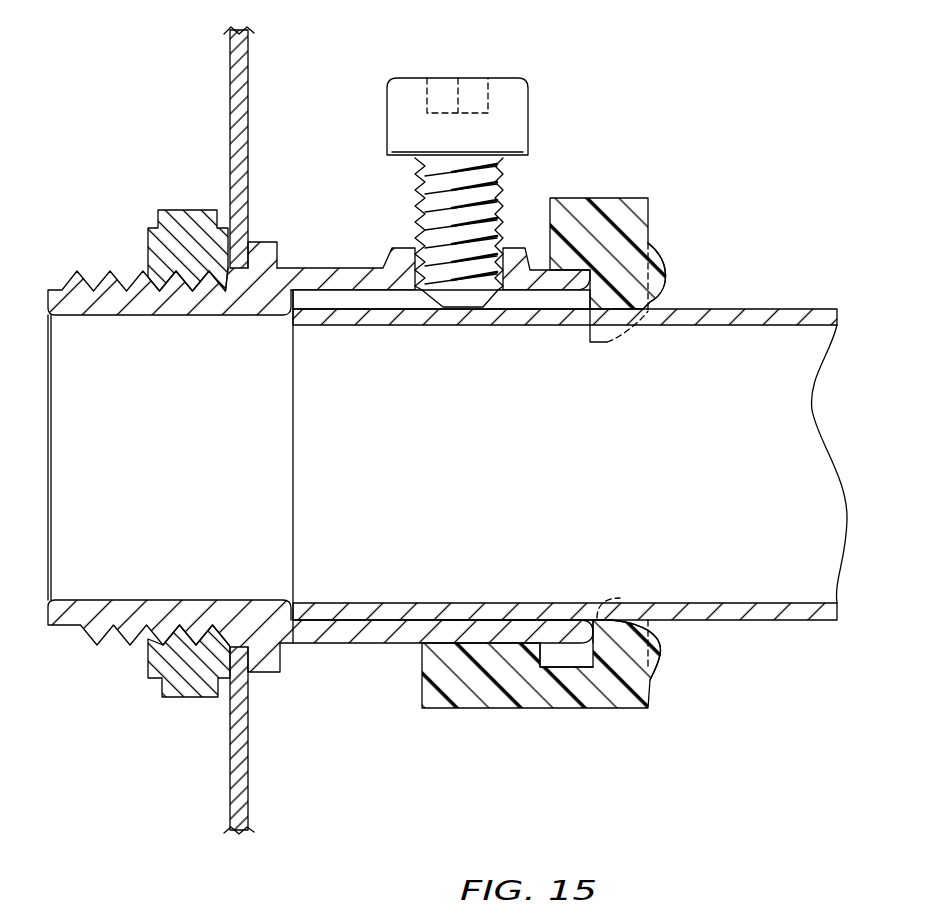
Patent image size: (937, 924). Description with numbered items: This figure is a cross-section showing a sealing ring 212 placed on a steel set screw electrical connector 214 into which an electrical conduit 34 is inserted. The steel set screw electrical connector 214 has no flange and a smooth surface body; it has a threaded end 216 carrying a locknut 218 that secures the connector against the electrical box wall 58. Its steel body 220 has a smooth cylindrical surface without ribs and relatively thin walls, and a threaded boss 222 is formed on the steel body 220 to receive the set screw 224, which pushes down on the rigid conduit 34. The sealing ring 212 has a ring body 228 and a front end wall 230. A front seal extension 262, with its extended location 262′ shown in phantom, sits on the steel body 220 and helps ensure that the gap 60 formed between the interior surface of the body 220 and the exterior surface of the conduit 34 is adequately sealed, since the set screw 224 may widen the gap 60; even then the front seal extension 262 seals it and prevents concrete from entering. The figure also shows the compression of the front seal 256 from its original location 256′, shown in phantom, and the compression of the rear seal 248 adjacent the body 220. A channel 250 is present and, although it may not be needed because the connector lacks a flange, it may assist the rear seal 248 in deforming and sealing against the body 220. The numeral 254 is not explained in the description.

The electrical conduit 34 is at (713, 307).
The electrical box wall 58 is at (246, 142).
The gap 60 is at (400, 298).
The sealing ring 212 is at (550, 714).
The steel set screw electrical connector 214 is at (278, 694).
The threaded end 216 is at (71, 277).
The locknut 218 is at (173, 217).
The steel body 220 is at (362, 637).
The threaded boss 222 is at (387, 242).
The set screw 224 is at (510, 112).
The ring body 228 is at (495, 693).
The front end wall 230 is at (653, 228).
The rear seal 248 is at (527, 630).
The channel 250 is at (568, 657).
The end portion 254 is at (585, 623).
The front seal 256 is at (650, 667).
The front seal original location 256′ is at (597, 618).
The front seal extension 262 is at (653, 297).
The front seal extension extended location 262′ is at (607, 342).